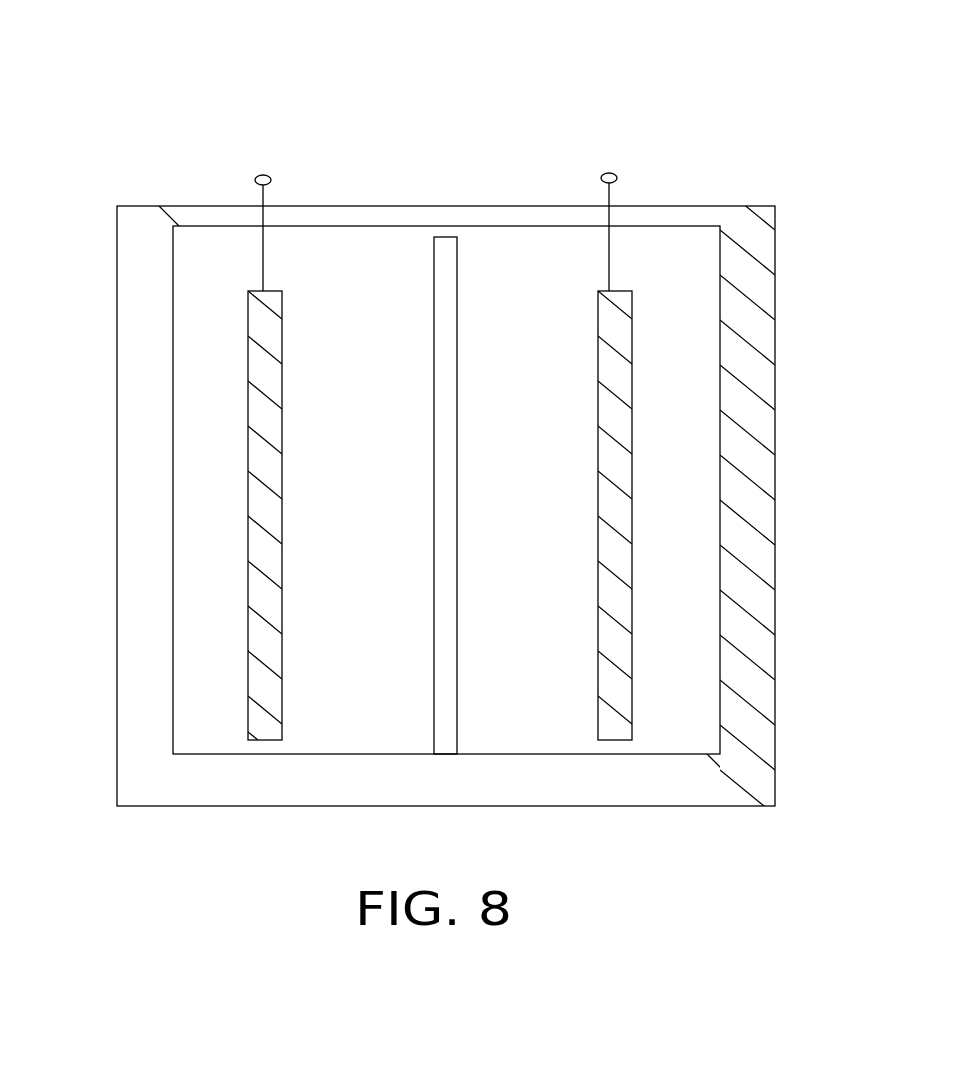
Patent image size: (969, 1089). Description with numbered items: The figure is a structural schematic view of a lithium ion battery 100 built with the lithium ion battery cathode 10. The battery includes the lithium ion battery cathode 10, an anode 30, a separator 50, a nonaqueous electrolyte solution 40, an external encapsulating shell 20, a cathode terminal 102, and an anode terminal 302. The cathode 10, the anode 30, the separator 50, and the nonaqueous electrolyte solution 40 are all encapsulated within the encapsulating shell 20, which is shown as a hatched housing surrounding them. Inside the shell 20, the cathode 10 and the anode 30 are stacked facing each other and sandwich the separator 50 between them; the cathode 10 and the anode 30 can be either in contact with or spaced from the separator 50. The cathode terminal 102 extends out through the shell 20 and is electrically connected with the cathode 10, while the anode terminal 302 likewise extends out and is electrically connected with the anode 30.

The lithium ion battery 100 is at (434, 63).
The lithium ion battery cathode 10 is at (263, 497).
The cathode terminal 102 is at (258, 175).
The external encapsulating shell 20 is at (775, 333).
The anode 30 is at (632, 500).
The anode terminal 302 is at (610, 174).
The nonaqueous electrolyte solution 40 is at (540, 633).
The separator 50 is at (434, 288).